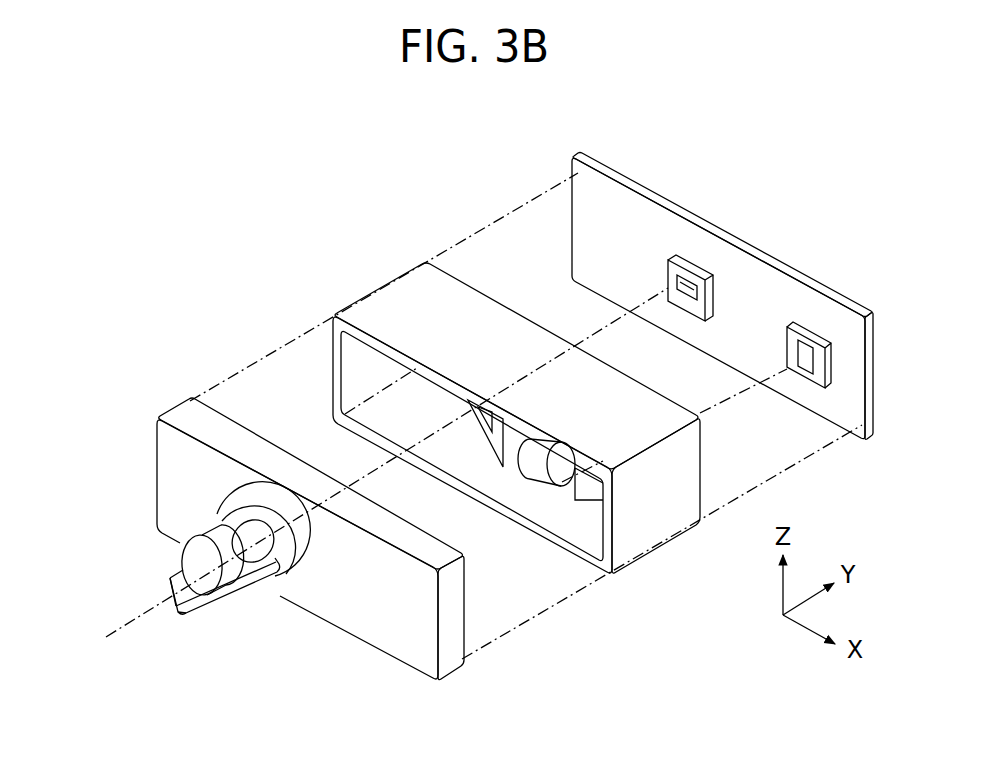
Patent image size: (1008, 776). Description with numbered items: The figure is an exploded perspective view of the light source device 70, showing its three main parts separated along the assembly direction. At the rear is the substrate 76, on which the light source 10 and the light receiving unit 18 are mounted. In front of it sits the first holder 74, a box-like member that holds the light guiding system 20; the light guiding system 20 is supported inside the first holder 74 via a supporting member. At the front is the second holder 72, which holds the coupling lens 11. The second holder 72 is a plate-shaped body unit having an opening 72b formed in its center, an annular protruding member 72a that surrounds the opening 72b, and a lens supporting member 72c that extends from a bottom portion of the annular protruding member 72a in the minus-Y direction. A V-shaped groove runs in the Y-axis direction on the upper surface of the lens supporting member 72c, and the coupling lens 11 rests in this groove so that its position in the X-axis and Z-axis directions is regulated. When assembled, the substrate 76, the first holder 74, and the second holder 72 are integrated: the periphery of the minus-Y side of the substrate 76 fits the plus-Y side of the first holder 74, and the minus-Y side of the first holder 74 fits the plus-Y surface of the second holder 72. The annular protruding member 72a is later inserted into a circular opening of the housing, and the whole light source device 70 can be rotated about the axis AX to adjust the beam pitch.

The light source device 70 is at (288, 191).
The second holder 72 is at (165, 408).
The annular protruding member 72a is at (311, 556).
The opening 72b is at (270, 590).
The lens supporting member 72c is at (183, 616).
The coupling lens 11 is at (178, 550).
The first holder 74 is at (388, 285).
The light guiding system 20 is at (550, 502).
The substrate 76 is at (572, 157).
The light source 10 is at (695, 262).
The light receiving unit 18 is at (814, 330).